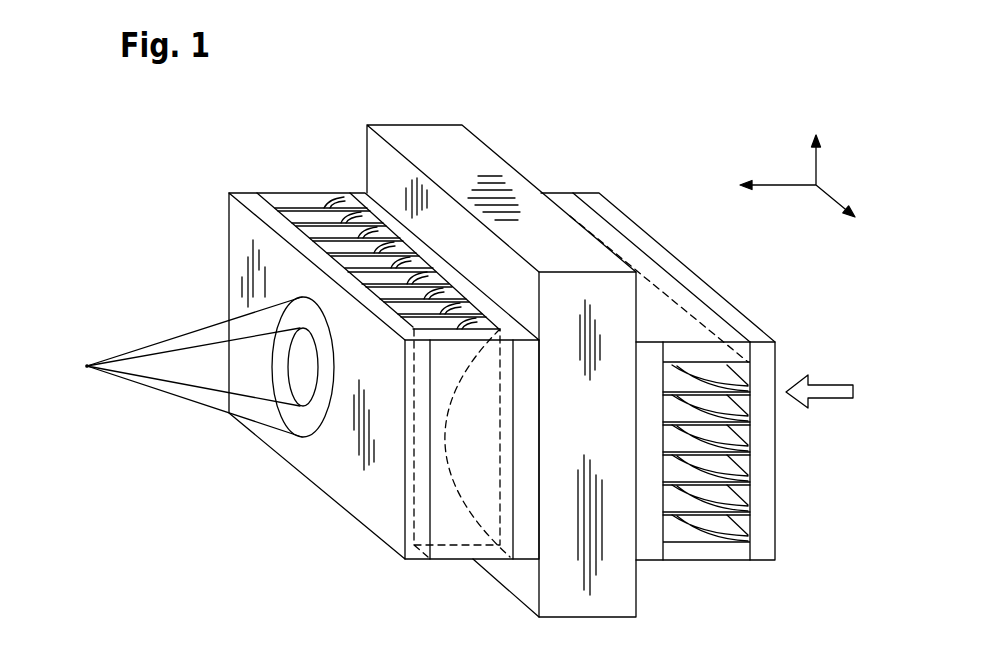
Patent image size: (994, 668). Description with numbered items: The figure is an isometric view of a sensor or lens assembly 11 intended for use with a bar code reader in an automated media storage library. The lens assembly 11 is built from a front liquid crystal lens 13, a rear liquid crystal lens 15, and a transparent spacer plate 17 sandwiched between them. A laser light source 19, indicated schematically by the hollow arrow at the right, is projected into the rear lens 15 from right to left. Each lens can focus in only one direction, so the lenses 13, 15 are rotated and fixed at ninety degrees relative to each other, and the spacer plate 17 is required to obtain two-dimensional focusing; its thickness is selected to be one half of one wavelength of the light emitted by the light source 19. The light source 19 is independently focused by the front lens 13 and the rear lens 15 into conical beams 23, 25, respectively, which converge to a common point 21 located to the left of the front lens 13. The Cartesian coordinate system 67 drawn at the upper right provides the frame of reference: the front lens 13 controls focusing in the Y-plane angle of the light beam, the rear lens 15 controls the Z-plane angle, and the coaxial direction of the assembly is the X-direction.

The lens assembly 11 is at (140, 140).
The front liquid crystal lens 13 is at (297, 185).
The rear liquid crystal lens 15 is at (620, 200).
The transparent spacer plate 17 is at (417, 125).
The laser light source 19 is at (827, 385).
The common point 21 is at (87, 366).
The conical beam 23 is at (175, 337).
The conical beam 25 is at (193, 388).
The Cartesian coordinate system 67 is at (818, 185).